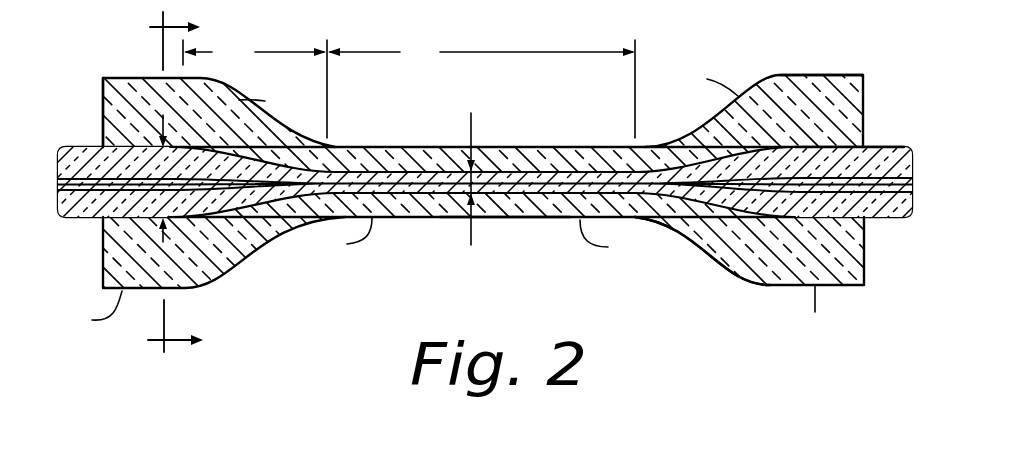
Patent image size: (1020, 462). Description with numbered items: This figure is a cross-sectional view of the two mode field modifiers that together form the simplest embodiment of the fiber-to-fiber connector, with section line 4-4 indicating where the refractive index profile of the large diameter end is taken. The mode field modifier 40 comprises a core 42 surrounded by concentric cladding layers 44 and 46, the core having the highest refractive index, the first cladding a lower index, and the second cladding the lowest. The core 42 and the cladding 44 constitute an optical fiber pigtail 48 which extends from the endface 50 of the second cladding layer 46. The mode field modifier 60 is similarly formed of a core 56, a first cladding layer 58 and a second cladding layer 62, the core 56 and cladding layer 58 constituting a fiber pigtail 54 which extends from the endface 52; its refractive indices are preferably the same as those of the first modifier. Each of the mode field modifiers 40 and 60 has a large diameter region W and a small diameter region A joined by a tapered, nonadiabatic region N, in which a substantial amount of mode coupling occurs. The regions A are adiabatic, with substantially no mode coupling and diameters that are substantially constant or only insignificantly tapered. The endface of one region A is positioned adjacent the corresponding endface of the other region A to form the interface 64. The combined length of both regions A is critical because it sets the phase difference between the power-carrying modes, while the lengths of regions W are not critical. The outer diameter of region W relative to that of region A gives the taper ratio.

The section line 4- 4 is at (160, 185).
The mode field modifier 40 is at (510, 185).
The core 42 is at (58, 185).
The cladding layer 44 is at (77, 157).
The second cladding layer 46 is at (128, 78).
The optical fiber pigtail 48 is at (82, 226).
The endface 50 is at (103, 88).
The endface 52 is at (865, 97).
The fiber pigtail 54 is at (888, 226).
The core 56 is at (914, 183).
The first cladding layer 58 is at (887, 147).
The mode field modifier 60 is at (710, 255).
The second cladding layer 62 is at (807, 80).
The interface 64 is at (508, 218).